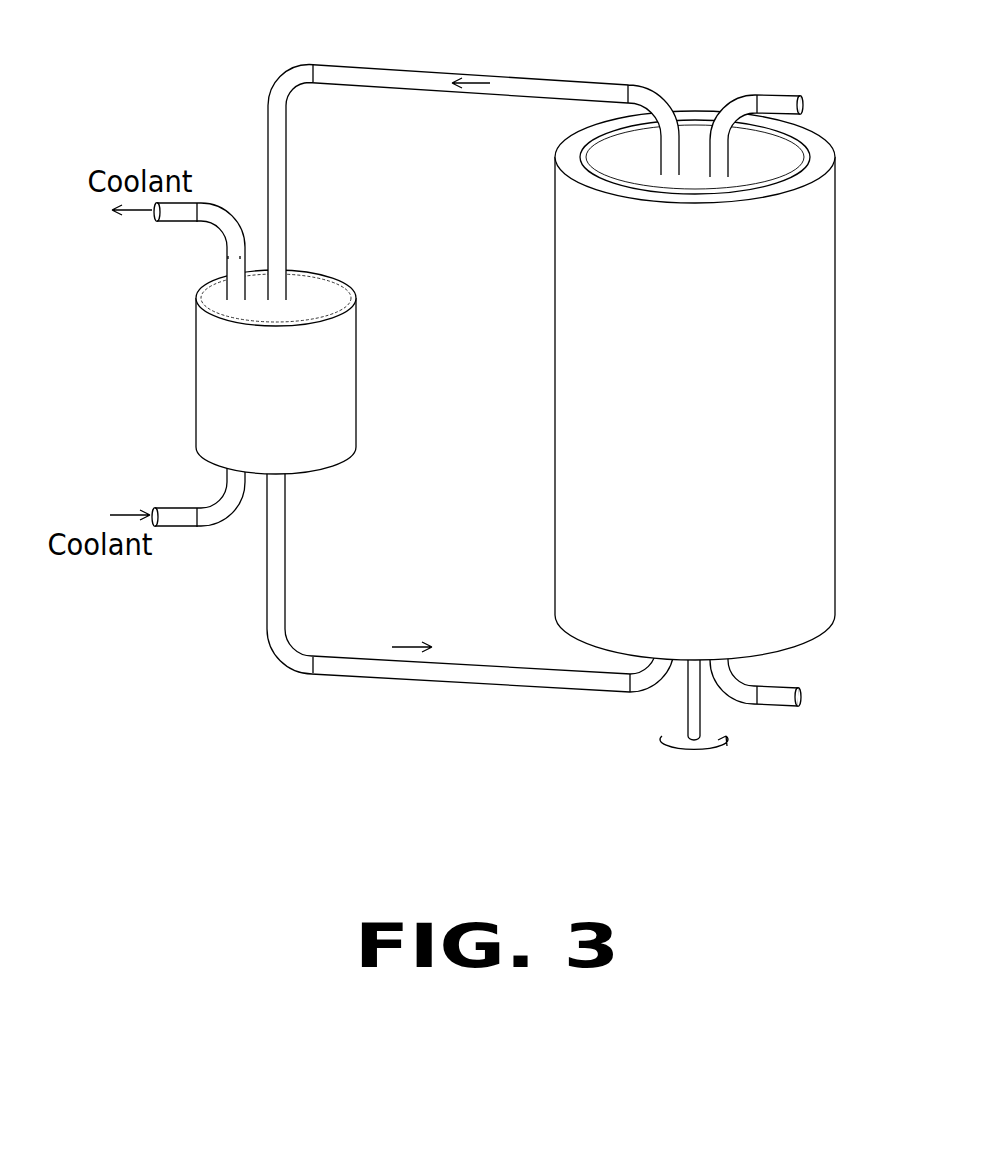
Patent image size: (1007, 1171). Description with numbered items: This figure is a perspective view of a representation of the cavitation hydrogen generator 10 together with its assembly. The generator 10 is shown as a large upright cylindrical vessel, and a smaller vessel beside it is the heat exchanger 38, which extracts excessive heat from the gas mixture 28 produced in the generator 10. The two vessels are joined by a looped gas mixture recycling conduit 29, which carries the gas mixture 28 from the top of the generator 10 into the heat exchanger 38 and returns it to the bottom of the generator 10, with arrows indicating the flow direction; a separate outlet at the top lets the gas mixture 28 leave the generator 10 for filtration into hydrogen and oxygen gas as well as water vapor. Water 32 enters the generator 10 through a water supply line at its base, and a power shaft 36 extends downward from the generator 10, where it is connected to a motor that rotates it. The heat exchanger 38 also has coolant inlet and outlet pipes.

The cavitation hydrogen generator 10 is at (567, 570).
The gas mixture 28 is at (471, 82).
The gas mixture recycling conduit 29 is at (362, 72).
The water 32 is at (828, 697).
The power shaft 36 is at (688, 697).
The heat exchange 38 is at (342, 372).